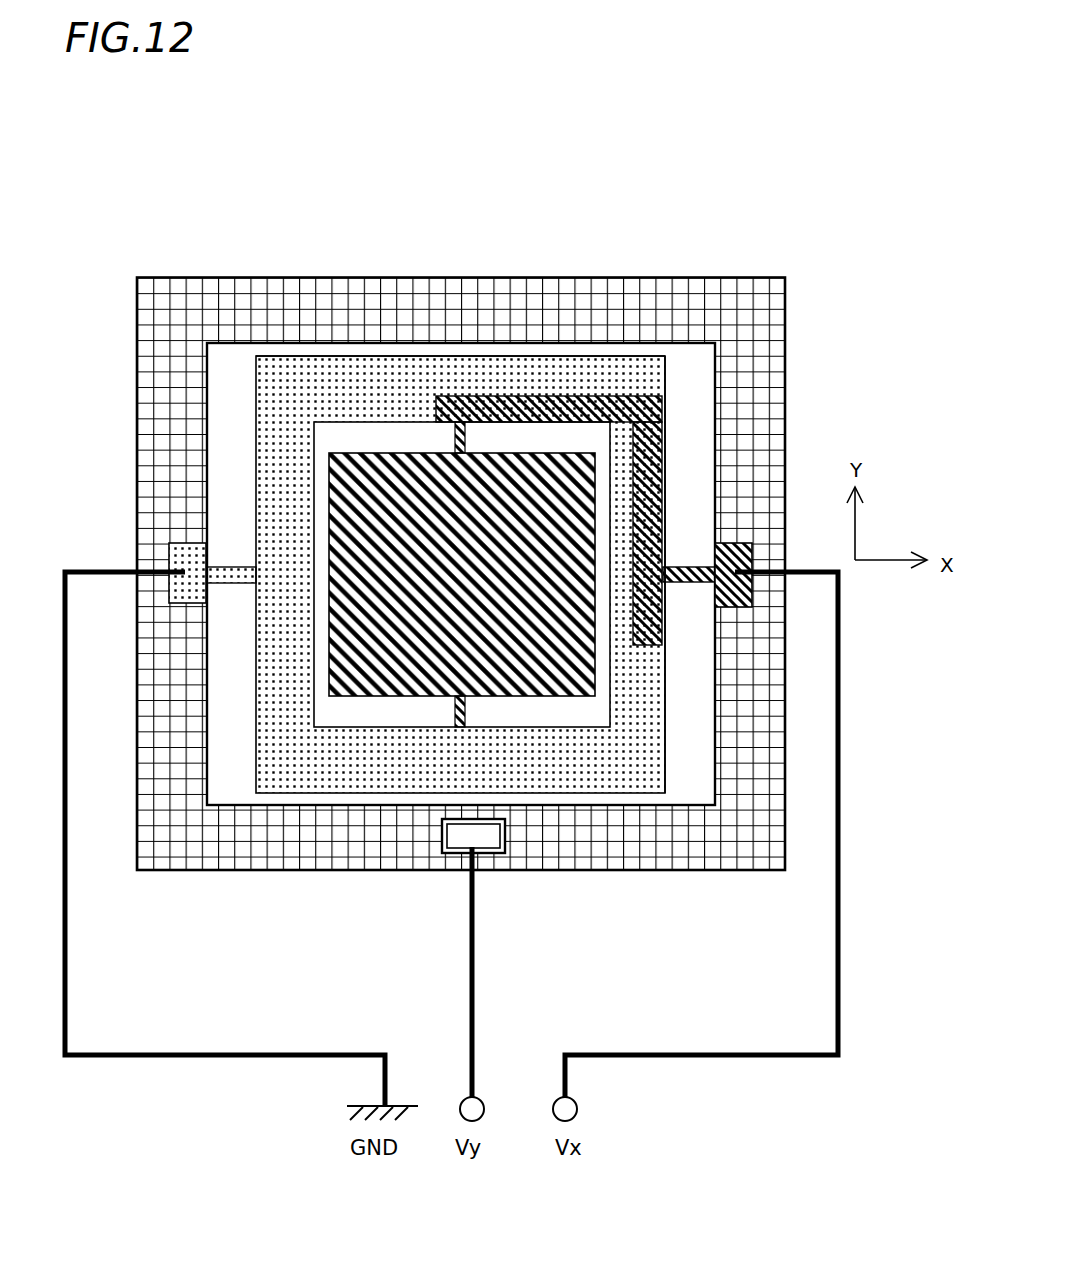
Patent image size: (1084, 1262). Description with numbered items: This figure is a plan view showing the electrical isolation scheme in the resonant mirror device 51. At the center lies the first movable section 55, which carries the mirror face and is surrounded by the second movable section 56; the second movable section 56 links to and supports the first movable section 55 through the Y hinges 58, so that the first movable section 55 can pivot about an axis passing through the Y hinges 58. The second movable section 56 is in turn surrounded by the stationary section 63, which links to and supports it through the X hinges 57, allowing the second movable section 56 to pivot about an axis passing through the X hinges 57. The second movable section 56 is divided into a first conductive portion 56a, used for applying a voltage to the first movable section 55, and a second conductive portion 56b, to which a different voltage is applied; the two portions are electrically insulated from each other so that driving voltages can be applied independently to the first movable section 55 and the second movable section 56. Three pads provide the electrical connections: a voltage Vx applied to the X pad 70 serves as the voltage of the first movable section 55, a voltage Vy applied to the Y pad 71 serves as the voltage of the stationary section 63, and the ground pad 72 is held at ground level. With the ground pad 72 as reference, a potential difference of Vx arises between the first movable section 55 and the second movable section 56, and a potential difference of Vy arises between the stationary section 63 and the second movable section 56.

The resonant mirror device 51 is at (286, 219).
The first movable section 55 is at (368, 675).
The second movable section 56 is at (630, 742).
The first conductive portion 56a is at (667, 385).
The second conductive portion 56b is at (460, 283).
The X hinges 57 is at (242, 570).
The Y hinges 58 is at (459, 396).
The stationary section 63 is at (640, 852).
The X pad 70 is at (737, 557).
The Y pad 71 is at (490, 835).
The ground pad 72 is at (200, 562).